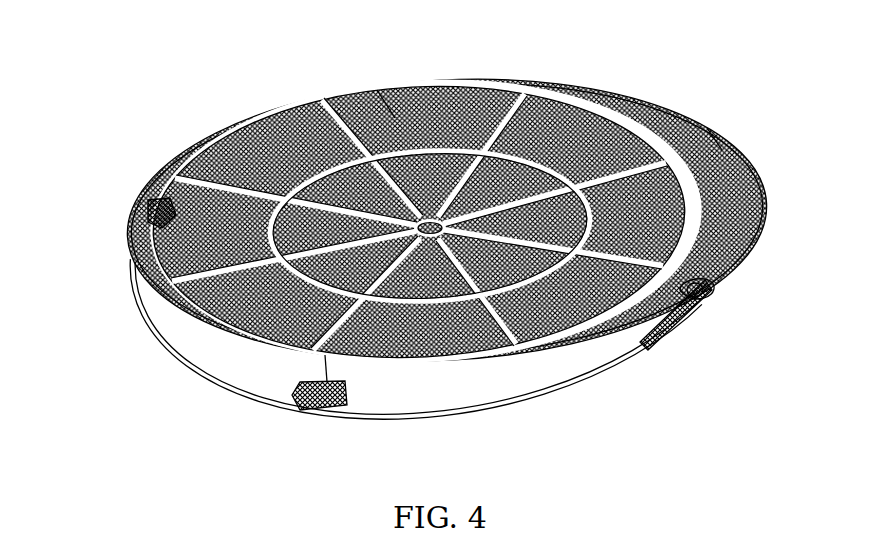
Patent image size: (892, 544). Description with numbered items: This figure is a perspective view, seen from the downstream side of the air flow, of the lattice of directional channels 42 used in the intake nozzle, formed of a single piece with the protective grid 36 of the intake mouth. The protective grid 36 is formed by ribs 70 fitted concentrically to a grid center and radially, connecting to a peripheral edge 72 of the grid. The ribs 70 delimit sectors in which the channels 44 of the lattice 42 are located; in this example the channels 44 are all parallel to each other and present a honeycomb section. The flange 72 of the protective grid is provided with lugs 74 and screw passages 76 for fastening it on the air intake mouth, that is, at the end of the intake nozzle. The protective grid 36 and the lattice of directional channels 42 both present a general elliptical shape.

The protective grid 36 is at (604, 380).
The lattice of directional channels 42 is at (580, 80).
The channels 44 is at (443, 82).
The ribs 70 is at (313, 107).
The peripheral edge 72 is at (180, 323).
The lugs 74 is at (377, 90).
The screw passages 76 is at (157, 203).